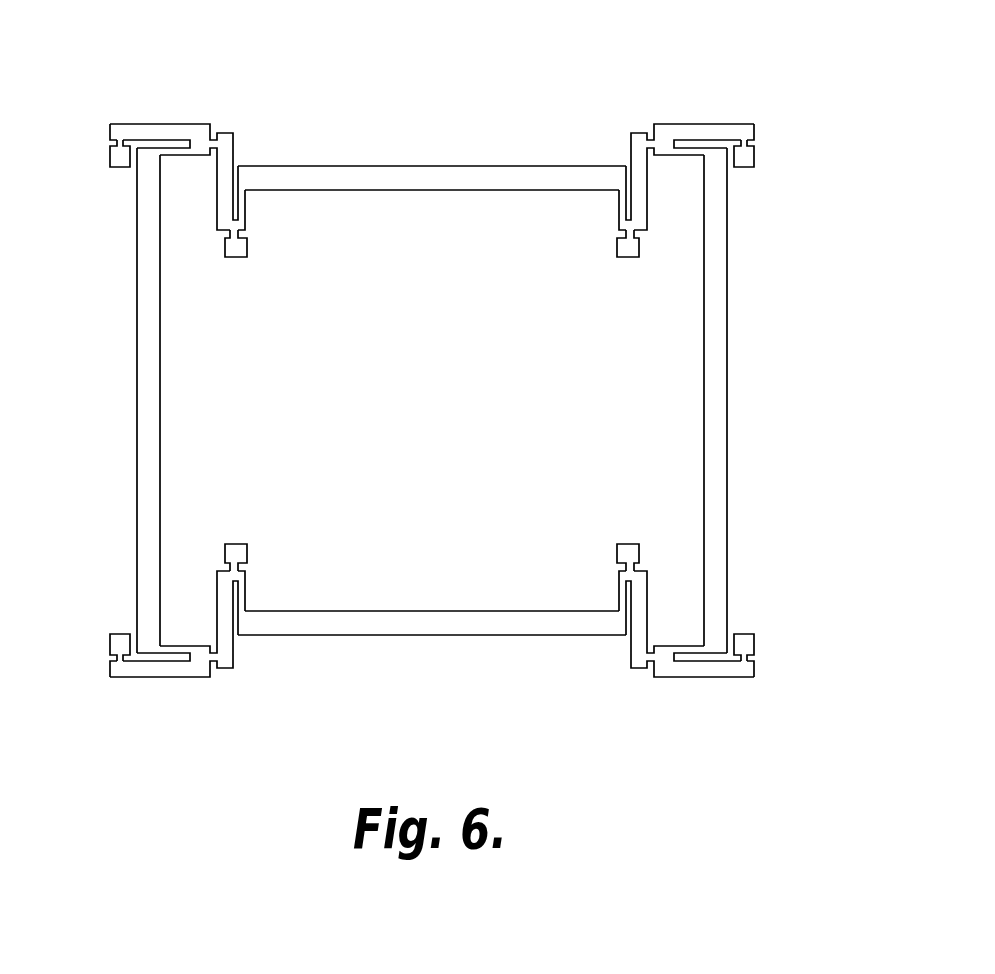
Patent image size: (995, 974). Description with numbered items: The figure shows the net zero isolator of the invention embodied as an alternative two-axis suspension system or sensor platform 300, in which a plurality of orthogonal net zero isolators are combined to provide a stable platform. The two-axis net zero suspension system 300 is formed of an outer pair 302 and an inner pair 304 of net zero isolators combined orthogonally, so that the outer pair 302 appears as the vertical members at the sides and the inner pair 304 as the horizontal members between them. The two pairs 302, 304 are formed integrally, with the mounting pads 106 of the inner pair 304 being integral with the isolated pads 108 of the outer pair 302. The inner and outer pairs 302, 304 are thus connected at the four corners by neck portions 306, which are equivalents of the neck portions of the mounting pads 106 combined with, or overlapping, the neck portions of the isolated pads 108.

The two-axis suspension system 300 is at (446, 369).
The outer pair of net zero isolators 302 is at (137, 372).
The inner pair of net zero isolators 304 is at (423, 165).
The neck portions 306 is at (220, 118).
The mounting pads 106 is at (117, 168).
The isolated pads 108 is at (236, 258).